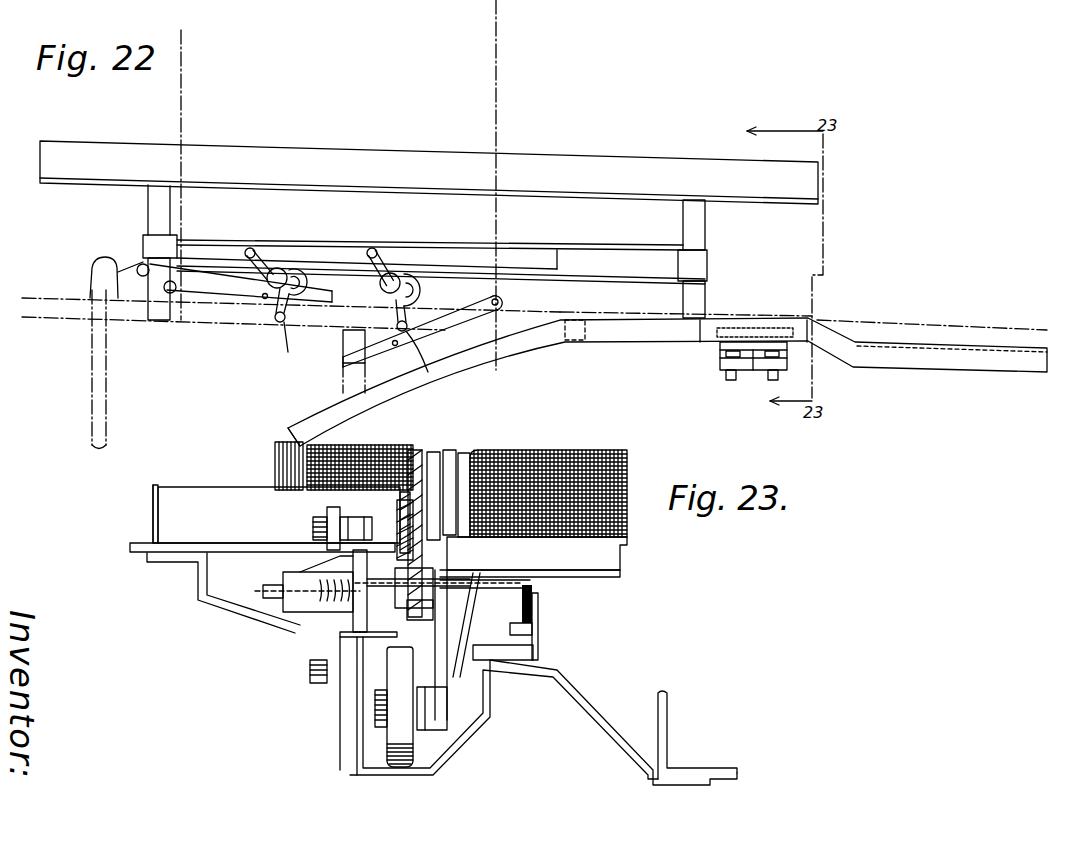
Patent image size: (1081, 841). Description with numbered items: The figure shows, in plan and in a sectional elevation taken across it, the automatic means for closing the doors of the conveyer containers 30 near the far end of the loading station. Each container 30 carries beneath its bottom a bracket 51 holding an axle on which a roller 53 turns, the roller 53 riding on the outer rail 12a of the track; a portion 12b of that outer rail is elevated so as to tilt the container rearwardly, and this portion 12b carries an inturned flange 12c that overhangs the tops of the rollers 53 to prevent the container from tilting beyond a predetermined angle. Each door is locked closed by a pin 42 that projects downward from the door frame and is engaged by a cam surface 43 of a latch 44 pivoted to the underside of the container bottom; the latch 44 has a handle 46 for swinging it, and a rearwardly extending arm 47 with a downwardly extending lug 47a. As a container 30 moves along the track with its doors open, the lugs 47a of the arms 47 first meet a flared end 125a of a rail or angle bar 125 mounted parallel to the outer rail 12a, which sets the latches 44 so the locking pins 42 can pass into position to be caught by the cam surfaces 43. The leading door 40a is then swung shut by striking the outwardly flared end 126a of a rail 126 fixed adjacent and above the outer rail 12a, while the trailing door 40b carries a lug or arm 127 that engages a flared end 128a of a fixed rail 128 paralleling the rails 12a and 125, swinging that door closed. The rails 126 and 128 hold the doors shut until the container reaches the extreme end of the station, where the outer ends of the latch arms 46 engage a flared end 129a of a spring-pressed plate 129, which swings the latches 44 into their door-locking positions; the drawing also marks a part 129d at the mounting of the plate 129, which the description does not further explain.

In FIG. 22, the container 30 is at (178, 123).
In FIG. 23, the container 30 is at (622, 577).
In FIG. 22, the rail or angle bar 125 is at (293, 241).
In FIG. 23, the rail or angle bar 125 is at (540, 619).
In FIG. 22, the flared end 125a is at (148, 237).
In FIG. 22, the fixed rail 128 is at (574, 275).
In FIG. 23, the fixed rail 128 is at (483, 651).
In FIG. 22, the flared end 128a is at (140, 266).
In FIG. 22, the lug or arm 127 is at (112, 322).
In FIG. 23, the lug or arm 127 is at (471, 612).
In FIG. 22, the trailing door 40b is at (305, 293).
In FIG. 22, the leading door 40a is at (430, 332).
In FIG. 23, the leading door 40a is at (275, 461).
In FIG. 22, the rearwardly extending arm 47 is at (247, 247).
In FIG. 23, the rearwardly extending arm 47 is at (510, 588).
In FIG. 22, the downwardly extending lug 47a is at (252, 249).
In FIG. 23, the downwardly extending lug 47a is at (522, 634).
In FIG. 22, the latch 44 is at (293, 270).
In FIG. 23, the latch 44 is at (383, 585).
In FIG. 22, the cam surface 43 is at (290, 298).
In FIG. 22, the pin 42 is at (265, 299).
In FIG. 22, the handle 46 is at (440, 390).
In FIG. 23, the handle 46 is at (378, 588).
In FIG. 22, the outer rail 12a is at (204, 322).
In FIG. 23, the outer rail 12a is at (353, 766).
In FIG. 23, the elevated portion of outer rail 12b is at (352, 714).
In FIG. 23, the inturned flange 12c is at (373, 639).
In FIG. 22, the rail 126 is at (636, 321).
In FIG. 23, the rail 126 is at (272, 535).
In FIG. 22, the outwardly flared end 126a is at (307, 404).
In FIG. 23, the outwardly flared end 126a is at (153, 515).
In FIG. 23, the spring-pressed plate 129 is at (347, 612).
In FIG. 22, the flared end 129a is at (696, 342).
In FIG. 22, the box 129d is at (741, 328).
In FIG. 23, the roller or wheel 53 is at (413, 751).
In FIG. 23, the bracket 51 is at (450, 684).